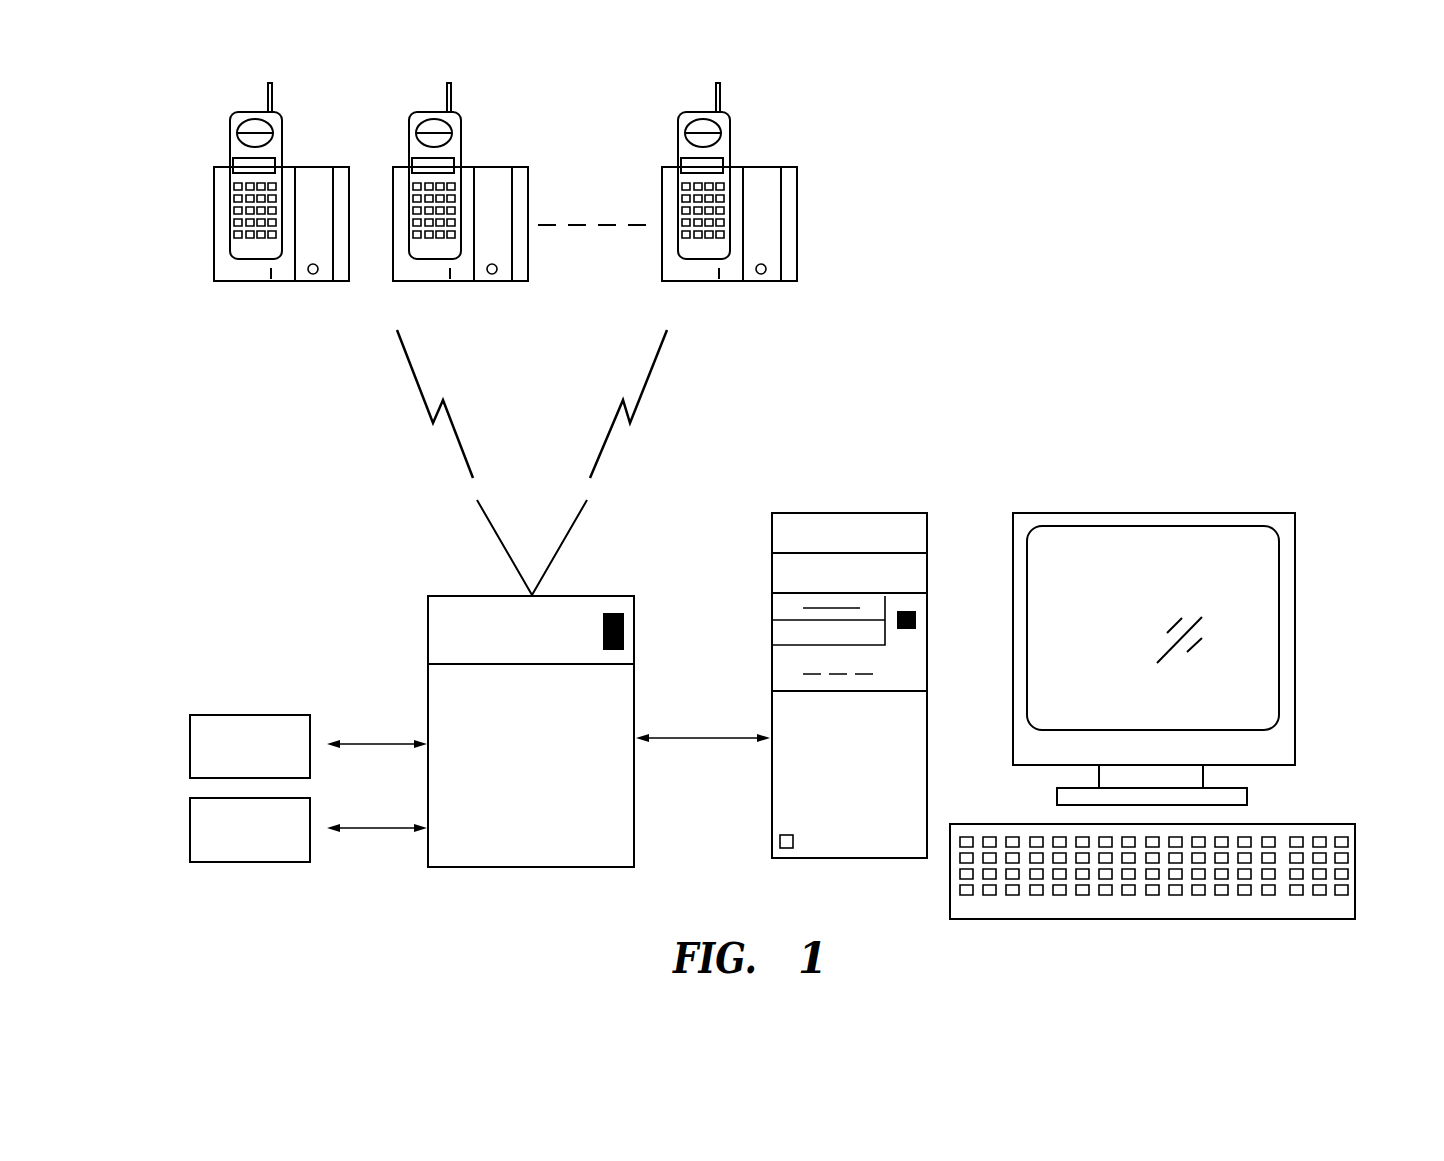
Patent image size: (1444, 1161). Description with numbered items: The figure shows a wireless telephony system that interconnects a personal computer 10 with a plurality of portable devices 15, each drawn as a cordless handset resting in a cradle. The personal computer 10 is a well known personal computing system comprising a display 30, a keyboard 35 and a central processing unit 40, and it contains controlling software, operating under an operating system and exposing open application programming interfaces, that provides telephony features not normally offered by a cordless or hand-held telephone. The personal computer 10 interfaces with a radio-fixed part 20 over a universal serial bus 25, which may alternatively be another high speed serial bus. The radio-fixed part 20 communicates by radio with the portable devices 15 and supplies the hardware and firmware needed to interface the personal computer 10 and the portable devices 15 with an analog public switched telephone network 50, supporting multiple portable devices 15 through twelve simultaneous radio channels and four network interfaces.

The personal computer 10 is at (1240, 457).
The portable devices 15 is at (214, 183).
The radio-fixed part 20 is at (427, 625).
The universal serial bus 25 is at (727, 745).
The display 30 is at (1295, 635).
The keyboard 35 is at (1355, 867).
The central processing unit 40 is at (860, 860).
The analog public switched telephone network 50 is at (190, 740).